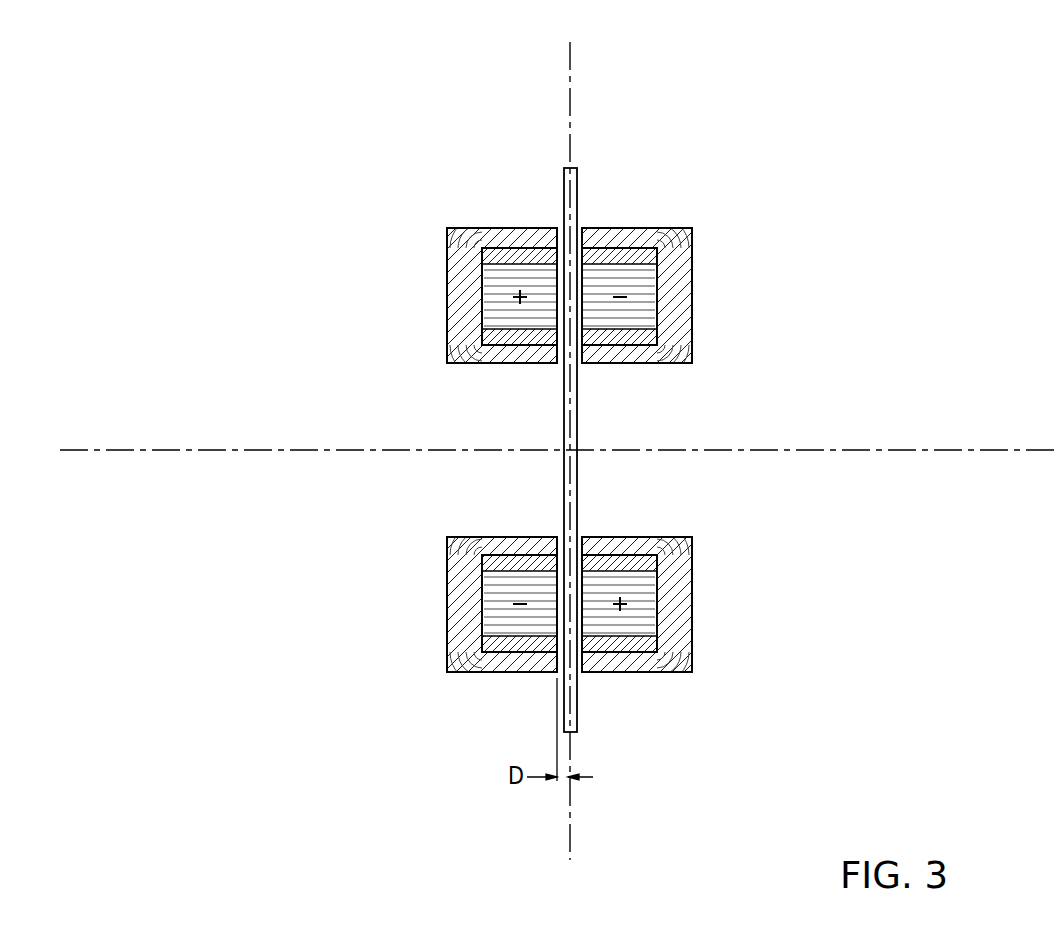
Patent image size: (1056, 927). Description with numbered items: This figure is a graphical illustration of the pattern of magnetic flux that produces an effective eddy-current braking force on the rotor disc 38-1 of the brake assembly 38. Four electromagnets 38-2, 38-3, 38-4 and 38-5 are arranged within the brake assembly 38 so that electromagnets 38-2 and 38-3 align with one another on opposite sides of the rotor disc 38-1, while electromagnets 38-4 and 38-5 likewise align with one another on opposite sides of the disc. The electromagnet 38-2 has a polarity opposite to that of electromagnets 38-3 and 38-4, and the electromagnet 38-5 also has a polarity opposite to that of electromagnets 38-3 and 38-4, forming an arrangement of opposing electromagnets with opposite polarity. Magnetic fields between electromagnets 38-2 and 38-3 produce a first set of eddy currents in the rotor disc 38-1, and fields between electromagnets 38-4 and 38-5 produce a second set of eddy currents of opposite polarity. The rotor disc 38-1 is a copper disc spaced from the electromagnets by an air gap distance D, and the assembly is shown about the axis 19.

The axis of rotation 19 is at (128, 452).
The brake assembly 38 is at (938, 225).
The rotor disc 38-1 is at (575, 167).
The electromagnet 38-2 is at (447, 303).
The electromagnet 38-3 is at (692, 303).
The electromagnet 38-4 is at (447, 598).
The electromagnet 38-5 is at (692, 598).